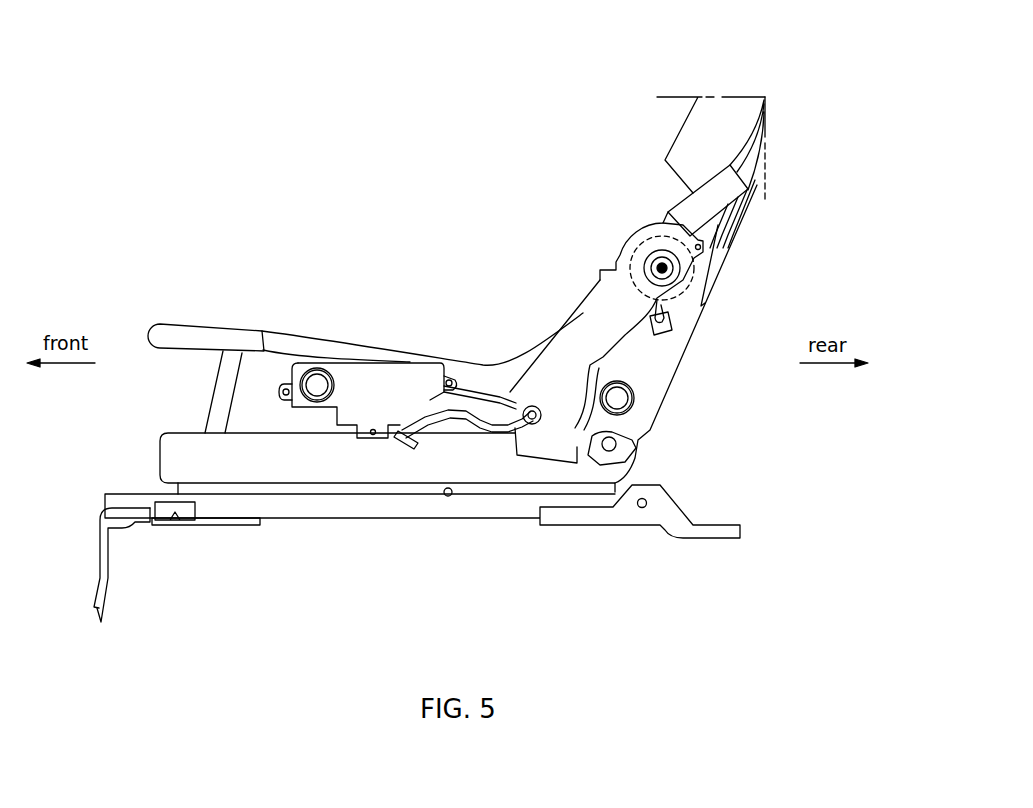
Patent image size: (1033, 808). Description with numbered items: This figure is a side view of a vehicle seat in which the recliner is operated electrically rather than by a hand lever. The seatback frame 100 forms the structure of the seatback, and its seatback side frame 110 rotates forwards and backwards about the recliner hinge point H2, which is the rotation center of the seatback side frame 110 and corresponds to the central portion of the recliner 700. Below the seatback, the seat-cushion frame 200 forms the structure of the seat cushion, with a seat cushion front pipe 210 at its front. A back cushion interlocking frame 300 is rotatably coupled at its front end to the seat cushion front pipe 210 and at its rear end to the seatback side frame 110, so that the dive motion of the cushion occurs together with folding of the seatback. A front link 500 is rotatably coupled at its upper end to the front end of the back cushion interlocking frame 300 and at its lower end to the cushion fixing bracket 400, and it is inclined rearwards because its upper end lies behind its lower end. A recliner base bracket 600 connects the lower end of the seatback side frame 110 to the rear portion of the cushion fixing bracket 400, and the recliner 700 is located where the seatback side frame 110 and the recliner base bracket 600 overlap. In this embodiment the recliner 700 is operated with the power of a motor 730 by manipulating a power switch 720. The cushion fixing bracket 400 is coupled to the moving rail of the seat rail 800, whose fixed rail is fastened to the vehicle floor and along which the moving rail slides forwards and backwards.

The seatback frame 100 is at (771, 137).
The seatback side frame 110 is at (728, 113).
The seat-cushion frame 200 is at (183, 313).
The seat cushion front pipe 210 is at (162, 334).
The back cushion interlocking frame 300 is at (493, 380).
The cushion fixing bracket 400 is at (293, 455).
The front link 500 is at (220, 401).
The recliner base bracket 600 is at (653, 374).
The recliner 700 is at (628, 258).
The power switch 720 is at (372, 380).
The motor 730 is at (713, 202).
The seat rail 800 is at (435, 510).
The recliner hinge point H2 is at (661, 266).